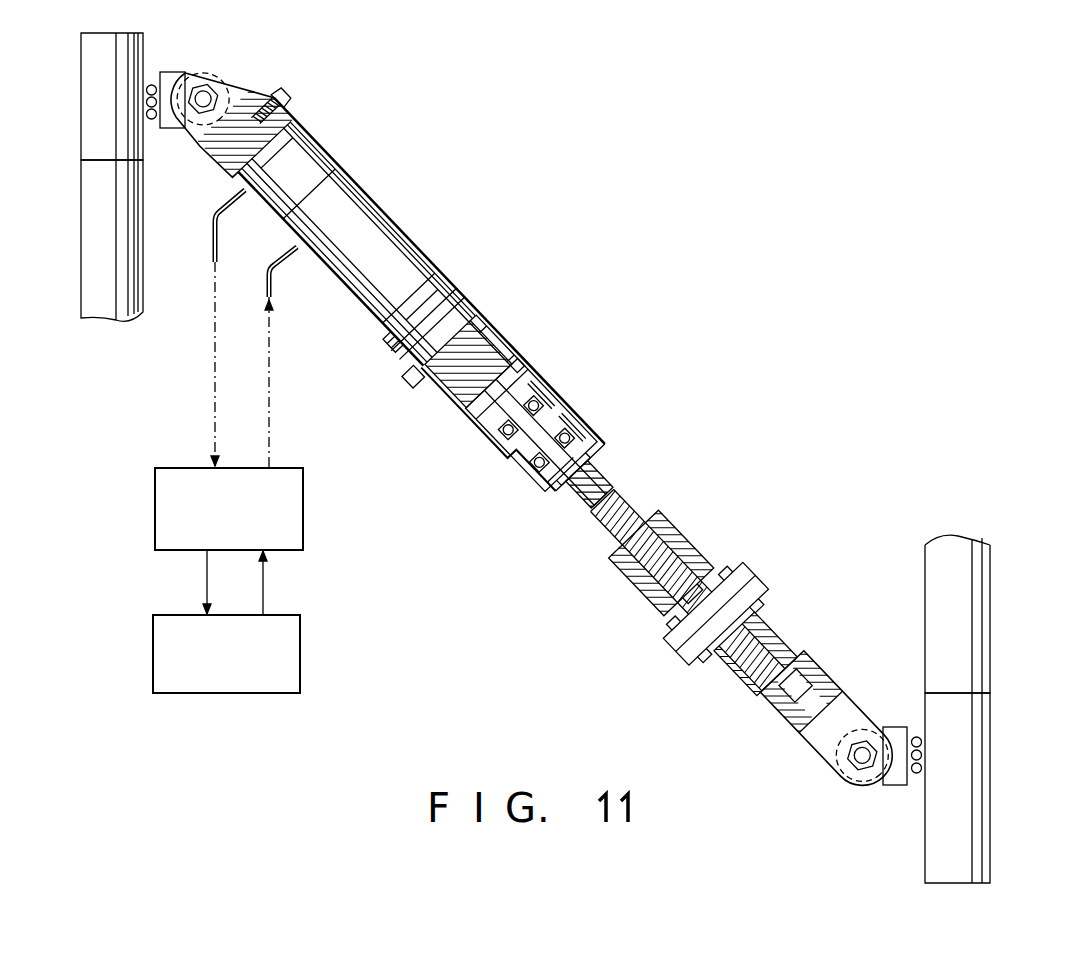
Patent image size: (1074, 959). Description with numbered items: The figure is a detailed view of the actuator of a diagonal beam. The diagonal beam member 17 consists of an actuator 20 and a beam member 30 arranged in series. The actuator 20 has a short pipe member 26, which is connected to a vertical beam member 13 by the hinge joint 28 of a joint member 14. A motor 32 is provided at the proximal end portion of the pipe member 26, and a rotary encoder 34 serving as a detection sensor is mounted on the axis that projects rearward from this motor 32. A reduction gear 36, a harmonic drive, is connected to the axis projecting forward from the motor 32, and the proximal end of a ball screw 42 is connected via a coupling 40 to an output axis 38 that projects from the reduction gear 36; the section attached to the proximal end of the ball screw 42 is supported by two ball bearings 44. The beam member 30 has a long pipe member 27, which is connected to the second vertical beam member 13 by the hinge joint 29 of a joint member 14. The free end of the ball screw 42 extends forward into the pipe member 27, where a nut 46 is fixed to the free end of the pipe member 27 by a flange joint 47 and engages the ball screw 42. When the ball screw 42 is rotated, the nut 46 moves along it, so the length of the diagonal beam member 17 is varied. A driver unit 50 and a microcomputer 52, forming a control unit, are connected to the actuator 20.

The vertical beam member 13 is at (80, 206).
The joint member 14 is at (85, 72).
The diagonal beam member 17 is at (534, 429).
The actuator 20 is at (387, 276).
The short pipe member 26 is at (425, 270).
The long pipe member 27 is at (822, 674).
The hinge joint 28 is at (210, 72).
The hinge joint 29 is at (882, 790).
The beam member 30 is at (760, 669).
The motor 32 is at (395, 246).
The rotary encoder 34 is at (320, 170).
The reduction gear 36 is at (395, 342).
The output axis 38 is at (452, 388).
The coupling 40 is at (490, 346).
The ball screw 42 is at (635, 508).
The ball bearings 44 is at (505, 442).
The nut 46 is at (638, 582).
The flange joint 47 is at (748, 578).
The driver unit 50 is at (304, 508).
The microcomputer 52 is at (300, 660).